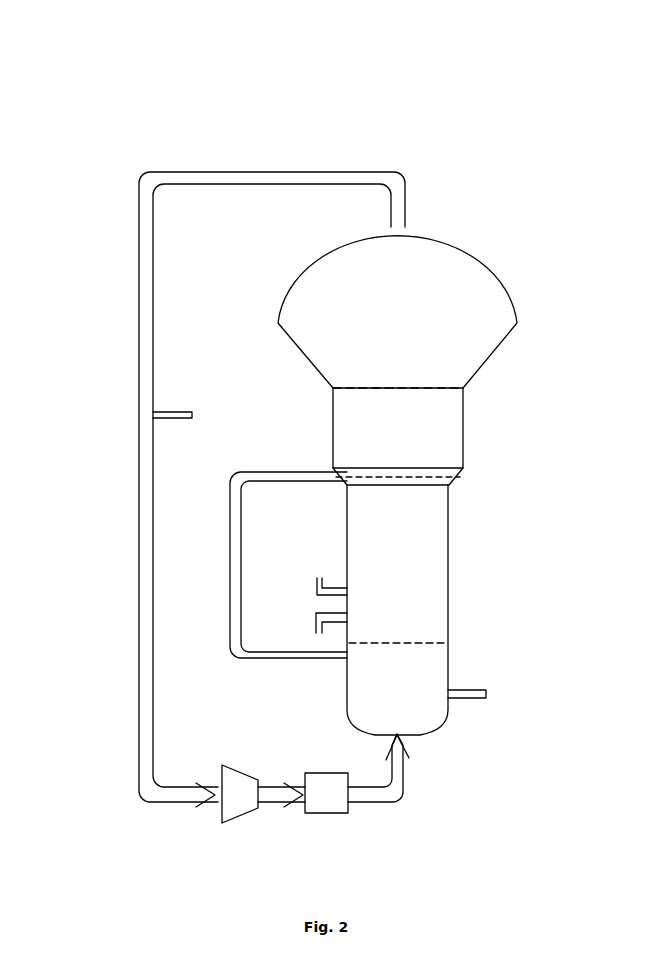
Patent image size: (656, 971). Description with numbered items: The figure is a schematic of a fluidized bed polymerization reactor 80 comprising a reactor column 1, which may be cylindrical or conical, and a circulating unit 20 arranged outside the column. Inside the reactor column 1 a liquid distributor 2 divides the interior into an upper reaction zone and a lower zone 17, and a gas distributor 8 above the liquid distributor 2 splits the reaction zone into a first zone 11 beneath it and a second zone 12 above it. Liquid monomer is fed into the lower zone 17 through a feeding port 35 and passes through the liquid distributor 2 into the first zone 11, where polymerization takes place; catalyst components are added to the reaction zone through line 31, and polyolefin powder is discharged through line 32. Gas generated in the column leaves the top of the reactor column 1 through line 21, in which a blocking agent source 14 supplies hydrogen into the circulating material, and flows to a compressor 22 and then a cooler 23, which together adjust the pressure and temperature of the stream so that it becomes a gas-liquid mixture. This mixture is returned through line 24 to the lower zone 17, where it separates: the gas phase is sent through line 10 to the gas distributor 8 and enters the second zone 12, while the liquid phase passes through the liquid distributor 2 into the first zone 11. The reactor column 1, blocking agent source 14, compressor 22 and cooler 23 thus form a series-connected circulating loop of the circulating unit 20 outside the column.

The fluidized bed polymerization reactor 80 is at (462, 132).
The line 21 is at (226, 181).
The circulating unit 20 is at (118, 368).
The blocking agent source 14 is at (185, 408).
The reactor column 1 is at (480, 252).
The second zone 12 is at (440, 425).
The gas distributor 8 is at (452, 470).
The first zone 11 is at (430, 545).
The liquid distributor 2 is at (425, 641).
The lower zone 17 is at (423, 685).
The feeding port 35 is at (480, 698).
The line 10 is at (235, 572).
The line 31 is at (317, 578).
The line 32 is at (316, 618).
The compressor 22 is at (234, 800).
The cooler 23 is at (325, 803).
The line 24 is at (380, 803).